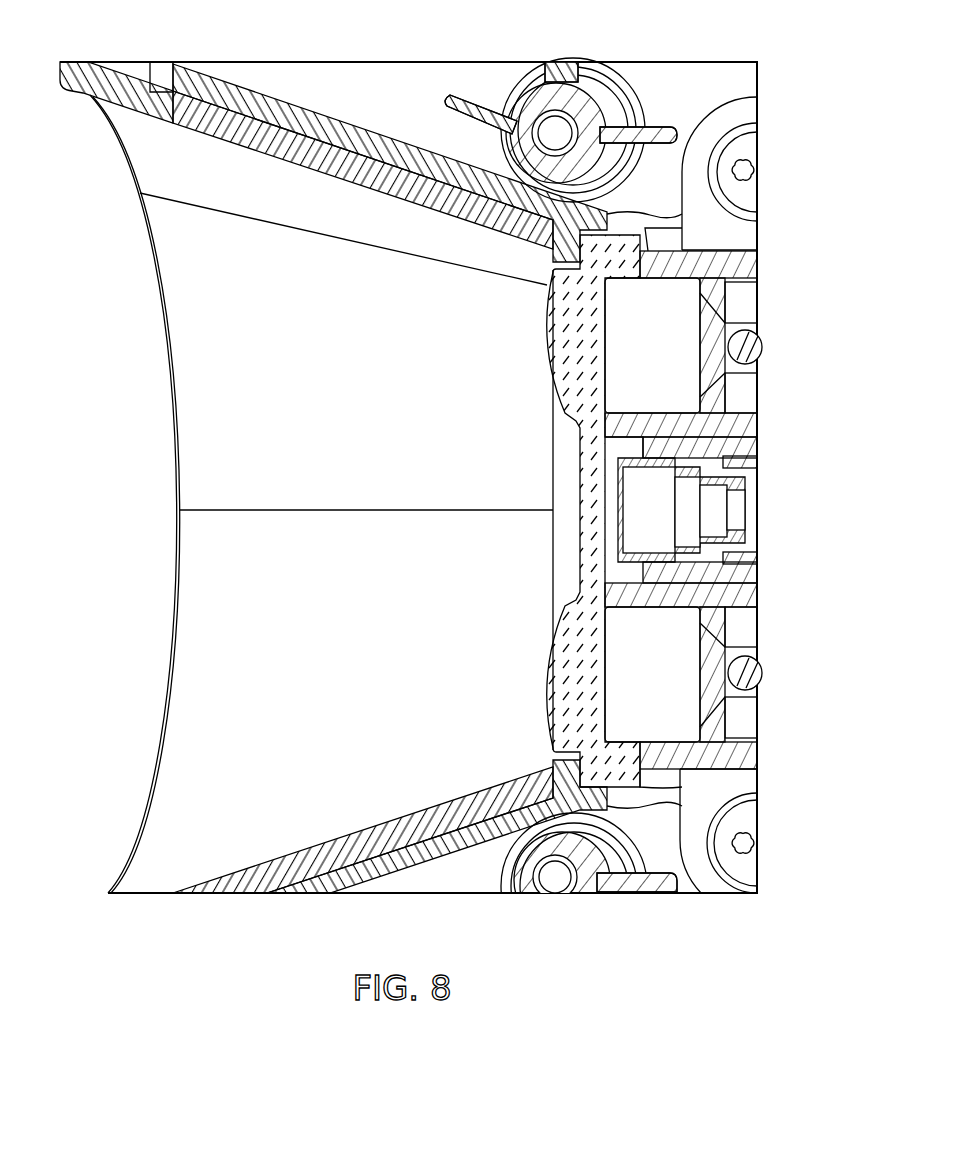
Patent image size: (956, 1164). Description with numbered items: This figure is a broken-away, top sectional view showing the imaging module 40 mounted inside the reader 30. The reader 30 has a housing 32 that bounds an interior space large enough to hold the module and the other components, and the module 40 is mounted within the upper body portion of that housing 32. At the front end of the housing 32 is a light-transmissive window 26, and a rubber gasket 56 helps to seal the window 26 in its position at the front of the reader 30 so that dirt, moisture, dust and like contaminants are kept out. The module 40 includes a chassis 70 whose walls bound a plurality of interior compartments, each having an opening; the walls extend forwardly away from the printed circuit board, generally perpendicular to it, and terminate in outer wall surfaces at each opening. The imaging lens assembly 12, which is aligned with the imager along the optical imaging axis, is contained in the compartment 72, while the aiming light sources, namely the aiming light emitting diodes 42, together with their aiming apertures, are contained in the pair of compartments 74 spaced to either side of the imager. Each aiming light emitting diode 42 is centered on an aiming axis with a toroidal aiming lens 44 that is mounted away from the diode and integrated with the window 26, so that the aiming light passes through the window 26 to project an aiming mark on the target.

The imaging lens assembly 12 is at (733, 543).
The light-transmissive window 26 is at (587, 547).
The reader 30 is at (760, 112).
The housing 32 is at (78, 61).
The imaging module 40 is at (567, 511).
The aiming light emitting diode 42 is at (748, 347).
The toroidal aiming lens 44 is at (552, 340).
The rubber gasket 56 is at (322, 130).
The chassis 70 is at (745, 264).
The compartment 72 is at (620, 442).
The compartment 74 is at (668, 281).